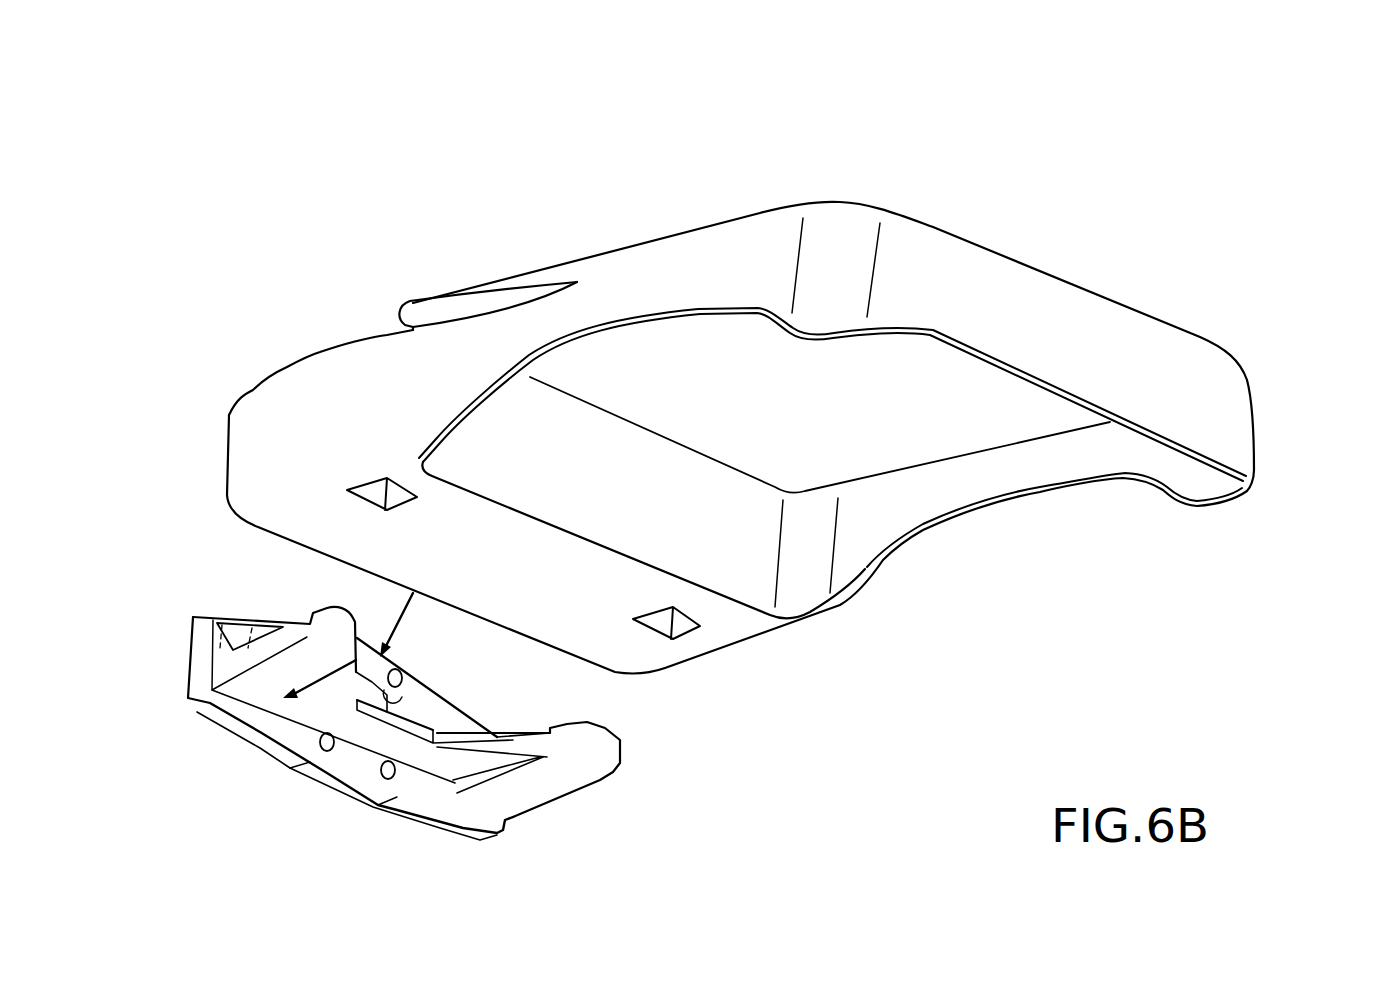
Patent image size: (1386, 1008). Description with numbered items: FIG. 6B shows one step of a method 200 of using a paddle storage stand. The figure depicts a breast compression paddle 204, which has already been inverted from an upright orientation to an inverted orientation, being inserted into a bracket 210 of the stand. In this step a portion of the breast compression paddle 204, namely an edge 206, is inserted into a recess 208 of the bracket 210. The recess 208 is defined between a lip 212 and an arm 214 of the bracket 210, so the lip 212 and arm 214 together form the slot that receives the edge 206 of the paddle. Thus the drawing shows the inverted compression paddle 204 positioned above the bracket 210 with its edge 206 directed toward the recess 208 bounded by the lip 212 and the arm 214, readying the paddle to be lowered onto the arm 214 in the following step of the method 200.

The method of using a paddle storage stand 200 is at (1205, 174).
The breast compression paddle 204 is at (1085, 312).
The edge 206 is at (308, 563).
The recess 208 is at (226, 643).
The bracket 210 is at (205, 710).
The lip 212 is at (440, 718).
The arm 214 is at (558, 780).